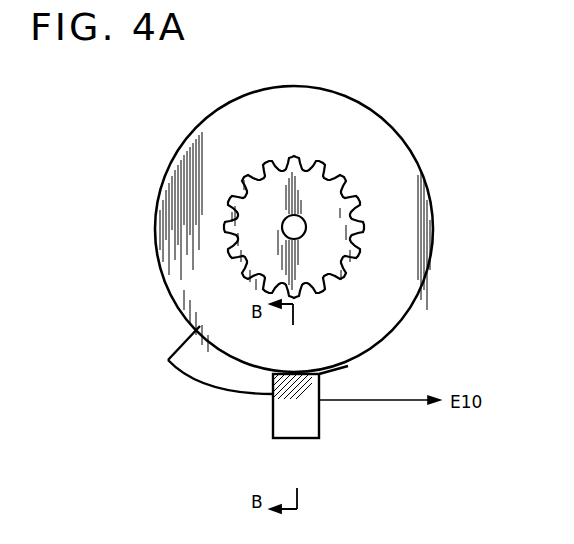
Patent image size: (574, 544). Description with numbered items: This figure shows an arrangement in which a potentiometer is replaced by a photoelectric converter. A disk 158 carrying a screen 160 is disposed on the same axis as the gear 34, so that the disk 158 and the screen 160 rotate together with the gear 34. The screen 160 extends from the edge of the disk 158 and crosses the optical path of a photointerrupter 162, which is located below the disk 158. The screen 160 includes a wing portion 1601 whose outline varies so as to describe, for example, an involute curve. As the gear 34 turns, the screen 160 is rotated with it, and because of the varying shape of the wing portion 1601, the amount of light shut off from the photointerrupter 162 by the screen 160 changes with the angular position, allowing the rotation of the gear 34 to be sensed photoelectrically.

The gear 34 is at (312, 182).
The disk 158 is at (413, 190).
The screen 160 is at (182, 366).
The wing portion 1601 is at (226, 394).
The photointerrupter 162 is at (322, 432).